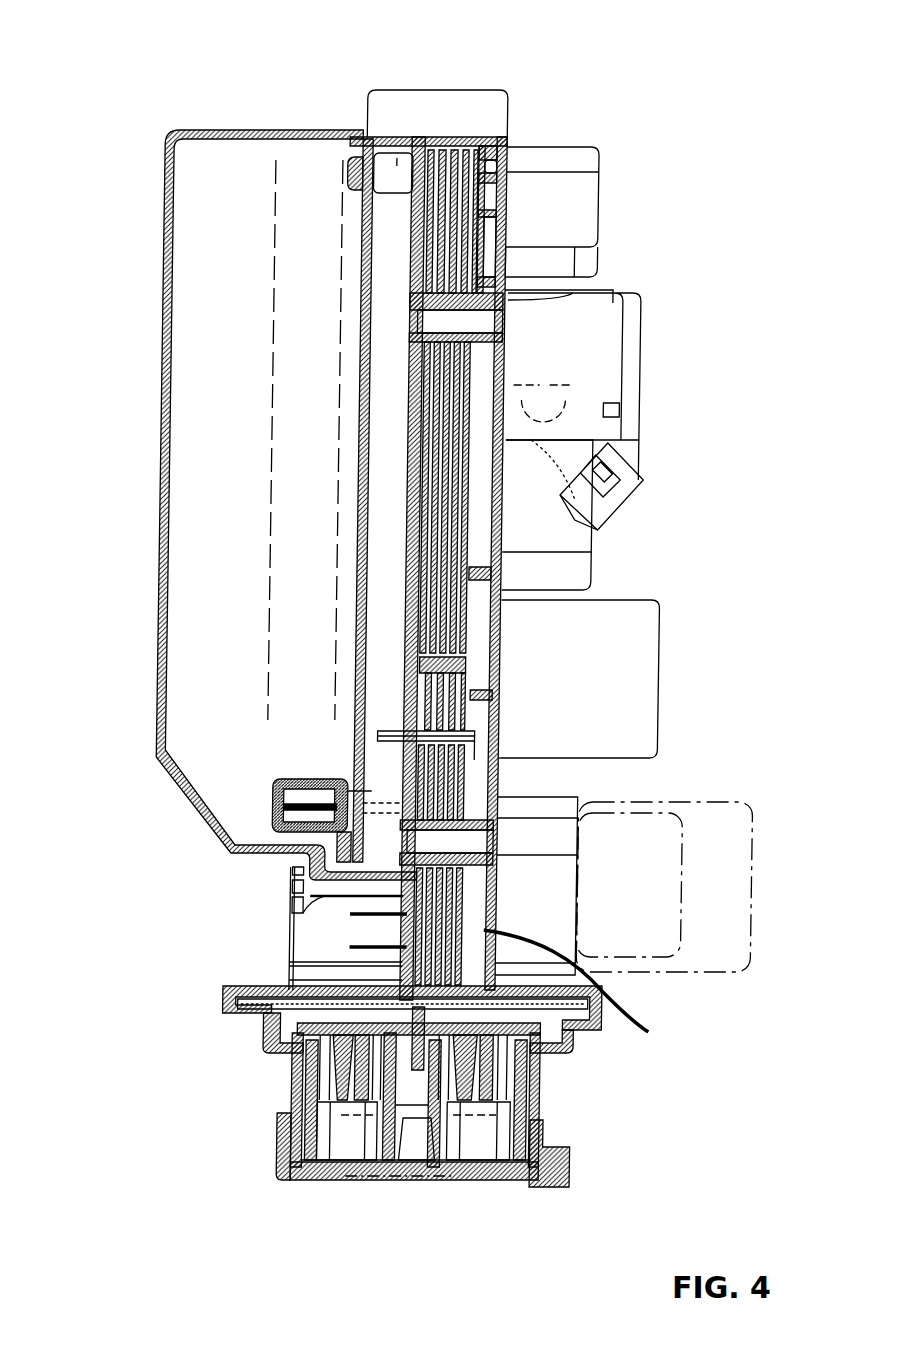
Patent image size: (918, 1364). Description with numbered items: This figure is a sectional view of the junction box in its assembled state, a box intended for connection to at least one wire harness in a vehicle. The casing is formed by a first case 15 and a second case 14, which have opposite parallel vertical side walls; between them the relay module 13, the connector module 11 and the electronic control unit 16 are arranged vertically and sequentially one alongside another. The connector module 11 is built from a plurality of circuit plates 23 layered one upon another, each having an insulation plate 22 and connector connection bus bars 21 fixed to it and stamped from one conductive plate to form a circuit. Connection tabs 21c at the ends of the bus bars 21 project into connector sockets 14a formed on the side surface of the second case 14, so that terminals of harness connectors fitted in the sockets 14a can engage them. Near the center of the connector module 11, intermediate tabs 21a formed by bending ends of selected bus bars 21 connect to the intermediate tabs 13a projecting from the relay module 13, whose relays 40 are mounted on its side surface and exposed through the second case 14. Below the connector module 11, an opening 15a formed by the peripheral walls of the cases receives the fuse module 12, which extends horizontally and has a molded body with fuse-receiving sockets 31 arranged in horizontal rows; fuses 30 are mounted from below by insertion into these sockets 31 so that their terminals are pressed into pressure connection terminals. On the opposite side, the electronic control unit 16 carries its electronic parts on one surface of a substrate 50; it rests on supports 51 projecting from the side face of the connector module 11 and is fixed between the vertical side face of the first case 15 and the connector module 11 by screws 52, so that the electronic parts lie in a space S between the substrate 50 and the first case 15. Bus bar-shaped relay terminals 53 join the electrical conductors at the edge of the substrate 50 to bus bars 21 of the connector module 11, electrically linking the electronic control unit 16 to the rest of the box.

The connector module 11 is at (420, 558).
The fuse module 12 is at (277, 1077).
The relay module 13 is at (586, 993).
The intermediate tabs 13a is at (340, 750).
The second case 14 is at (503, 680).
The connector sockets 14a is at (600, 620).
The first case 15 is at (165, 360).
The opening 15a is at (347, 1135).
The electronic control unit 16 is at (347, 520).
The connector connection bus bars 21 is at (475, 210).
The intermediate tabs 21a is at (381, 735).
The connection tabs 21c is at (480, 217).
The insulation plate 22 is at (465, 393).
The circuit plates 23 is at (459, 165).
The fuses 30 is at (362, 1127).
The fuse-receiving sockets 31 is at (428, 1170).
The relays 40 is at (643, 937).
The substrate 50 is at (357, 450).
The supports 51 is at (390, 137).
The screws 52 is at (347, 180).
The relay terminals 53 is at (293, 833).
The space S is at (312, 278).